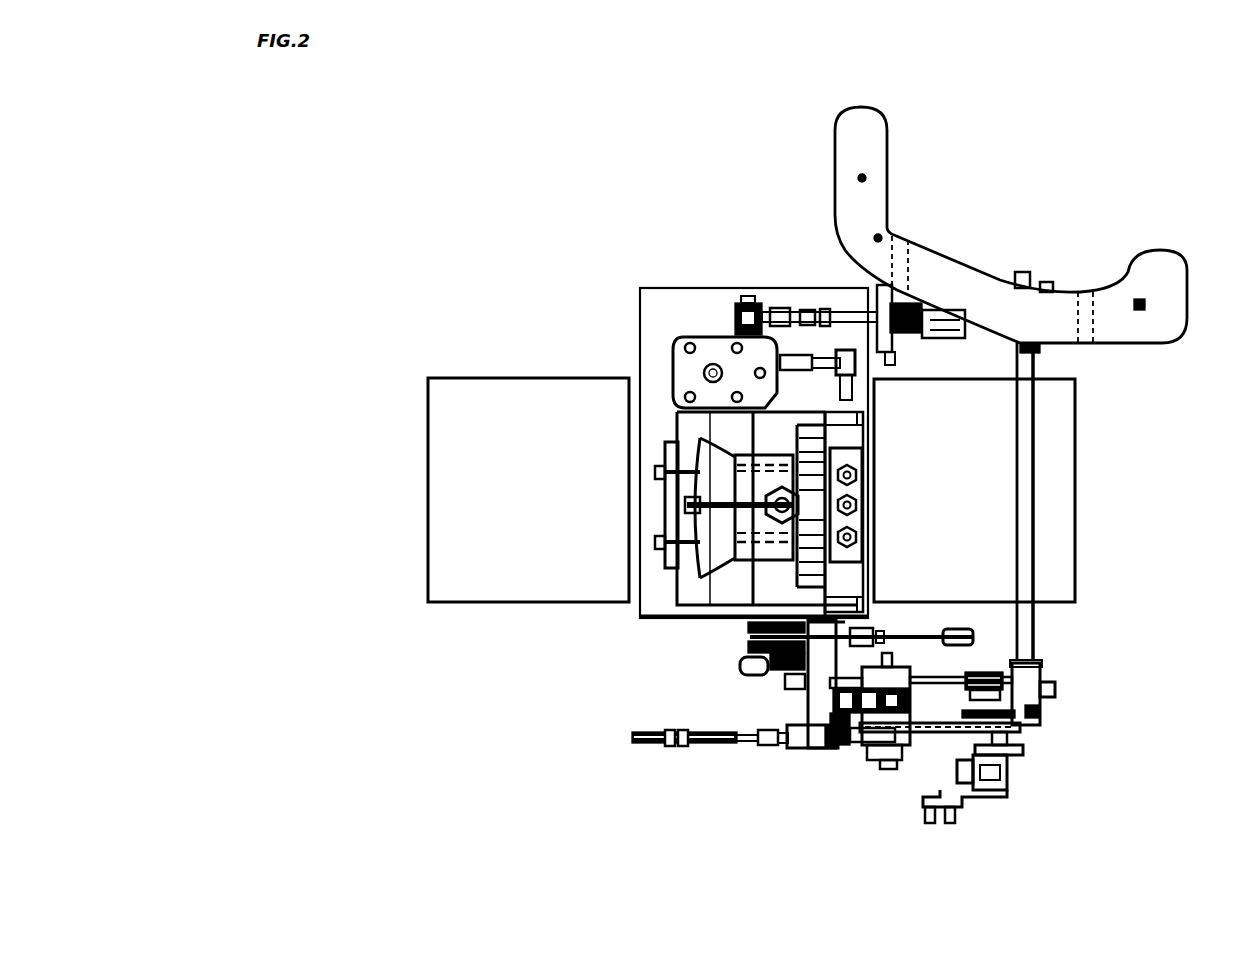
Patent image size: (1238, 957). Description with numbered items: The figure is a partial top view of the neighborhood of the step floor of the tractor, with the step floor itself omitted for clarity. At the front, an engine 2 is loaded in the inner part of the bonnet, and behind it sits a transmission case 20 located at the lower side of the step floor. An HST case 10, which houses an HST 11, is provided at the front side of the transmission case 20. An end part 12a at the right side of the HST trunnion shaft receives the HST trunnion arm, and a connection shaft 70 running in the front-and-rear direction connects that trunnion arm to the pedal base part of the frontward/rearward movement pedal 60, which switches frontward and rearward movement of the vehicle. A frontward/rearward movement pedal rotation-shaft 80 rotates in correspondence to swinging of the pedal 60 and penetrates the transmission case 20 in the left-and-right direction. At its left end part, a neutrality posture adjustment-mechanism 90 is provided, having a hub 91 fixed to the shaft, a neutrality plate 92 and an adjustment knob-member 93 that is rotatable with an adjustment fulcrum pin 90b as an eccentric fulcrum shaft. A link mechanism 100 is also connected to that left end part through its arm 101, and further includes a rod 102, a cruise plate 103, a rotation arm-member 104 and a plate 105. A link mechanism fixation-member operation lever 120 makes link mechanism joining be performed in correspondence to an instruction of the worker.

The engine 2 is at (528, 378).
The HST case 10 is at (753, 288).
The HST 11 is at (673, 342).
The end part 12a is at (740, 333).
The transmission case 20 is at (1075, 490).
The frontward/rearward movement pedal 60 is at (950, 270).
The connection shaft 70 is at (850, 312).
The frontward/rearward movement pedal rotation-shaft 80 is at (1037, 433).
The neutrality posture adjustment-mechanism 90 is at (900, 808).
The adjustment fulcrum pin 90b is at (890, 772).
The hub 91 is at (1045, 668).
The neutrality plate 92 is at (955, 742).
The adjustment knob-member 93 is at (873, 760).
The link mechanism 100 is at (733, 681).
The arm 101 is at (1006, 672).
The rod 102 is at (1015, 688).
The cruise plate 103 is at (940, 680).
The rotation arm-member 104 is at (878, 662).
The plate 105 is at (795, 689).
The link mechanism fixation-member operation lever 120 is at (960, 628).